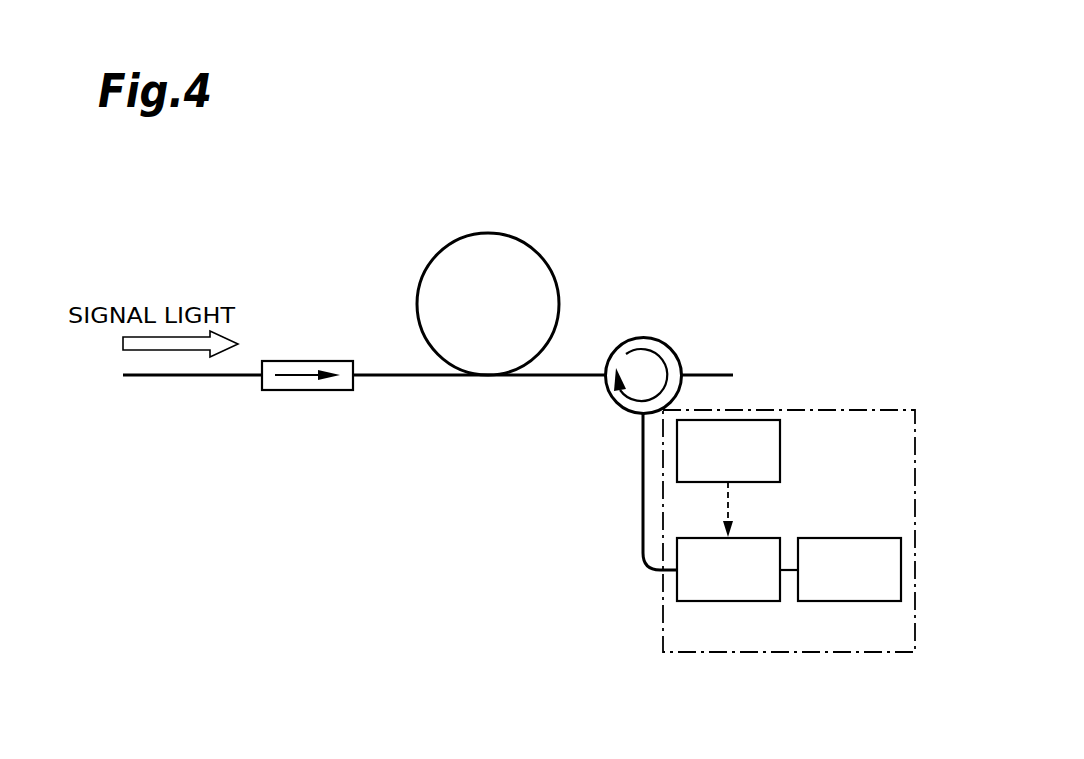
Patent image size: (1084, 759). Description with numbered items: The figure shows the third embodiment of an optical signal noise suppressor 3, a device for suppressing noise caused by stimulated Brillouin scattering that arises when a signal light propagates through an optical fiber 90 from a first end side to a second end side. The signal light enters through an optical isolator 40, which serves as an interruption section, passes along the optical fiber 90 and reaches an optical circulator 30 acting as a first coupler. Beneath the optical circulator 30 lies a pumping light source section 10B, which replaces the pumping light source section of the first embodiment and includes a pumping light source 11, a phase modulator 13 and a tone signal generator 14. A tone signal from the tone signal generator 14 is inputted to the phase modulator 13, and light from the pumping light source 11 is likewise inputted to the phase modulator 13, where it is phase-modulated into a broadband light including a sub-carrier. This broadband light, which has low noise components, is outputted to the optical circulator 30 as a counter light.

The optical signal noise suppressor 3 is at (713, 136).
The optical isolator 40 is at (308, 361).
The optical fiber 90 is at (537, 249).
The optical circulator 30 is at (645, 337).
The pumping light source section 10B is at (887, 655).
The tone signal generator 14 is at (781, 450).
The phase modulator 13 is at (734, 602).
The pumping light source 11 is at (855, 602).